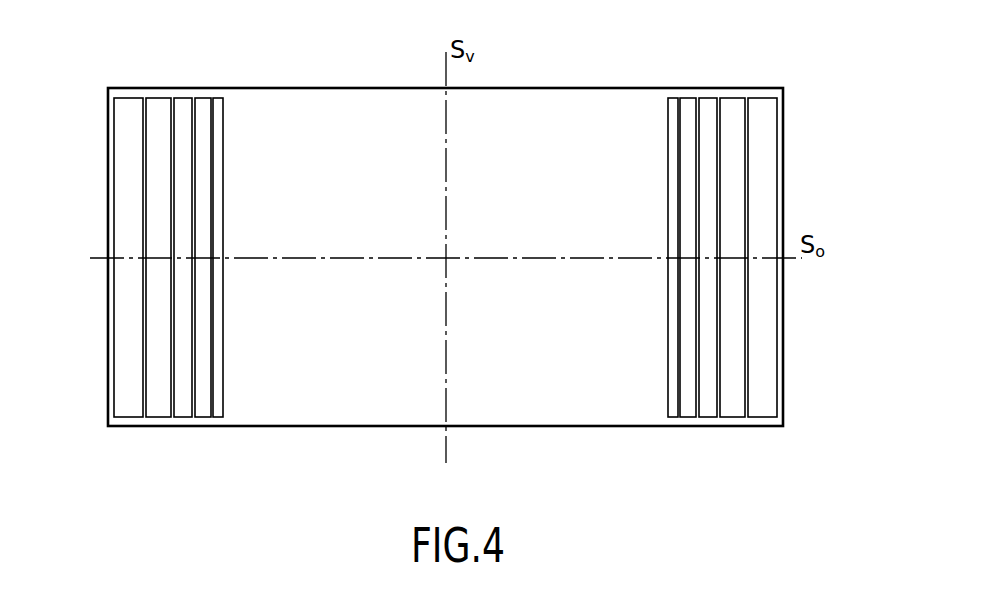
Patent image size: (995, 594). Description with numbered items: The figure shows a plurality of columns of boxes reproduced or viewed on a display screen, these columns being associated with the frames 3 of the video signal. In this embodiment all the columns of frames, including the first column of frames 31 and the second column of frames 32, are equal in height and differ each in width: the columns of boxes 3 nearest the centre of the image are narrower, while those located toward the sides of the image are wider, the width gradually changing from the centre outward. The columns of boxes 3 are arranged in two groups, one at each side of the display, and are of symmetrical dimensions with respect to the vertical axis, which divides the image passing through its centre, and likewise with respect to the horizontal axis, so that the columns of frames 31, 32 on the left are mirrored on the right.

The frame 3 is at (340, 88).
The first column of frames 31 is at (828, 352).
The second column of frames 32 is at (158, 392).